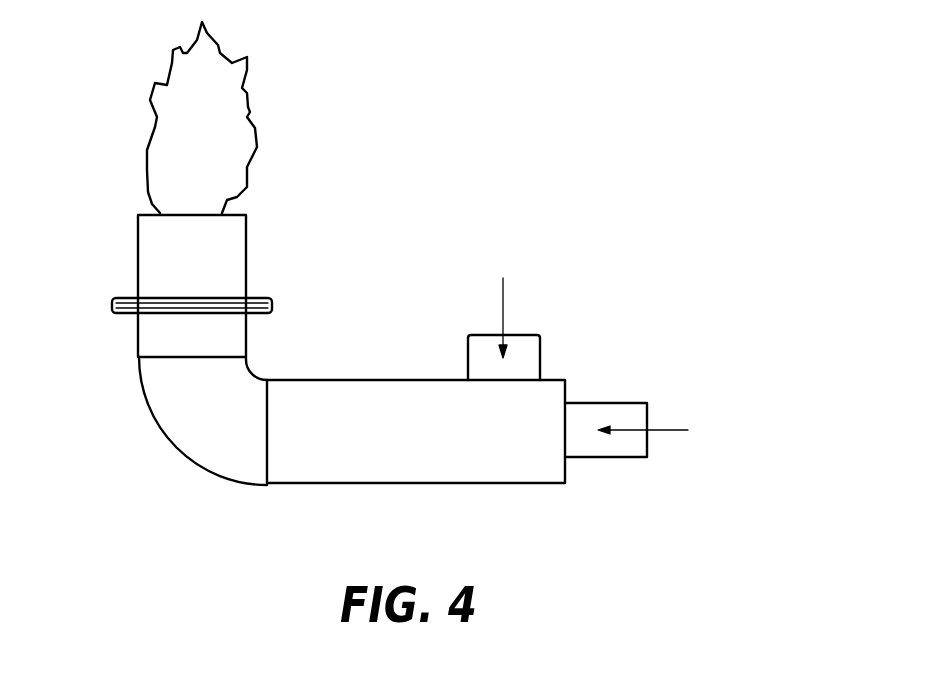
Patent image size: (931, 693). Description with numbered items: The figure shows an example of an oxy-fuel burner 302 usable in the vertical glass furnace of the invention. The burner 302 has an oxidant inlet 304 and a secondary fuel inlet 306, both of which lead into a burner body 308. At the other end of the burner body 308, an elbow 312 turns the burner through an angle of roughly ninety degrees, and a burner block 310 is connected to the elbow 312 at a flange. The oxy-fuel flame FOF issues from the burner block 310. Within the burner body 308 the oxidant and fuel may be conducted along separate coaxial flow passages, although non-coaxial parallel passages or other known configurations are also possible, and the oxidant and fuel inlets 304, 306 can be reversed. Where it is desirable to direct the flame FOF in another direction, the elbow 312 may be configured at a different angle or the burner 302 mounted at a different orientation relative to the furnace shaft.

The oxy-fuel burner 302 is at (644, 257).
The oxidant inlet 304 is at (505, 307).
The secondary fuel inlet 306 is at (667, 430).
The burner body 308 is at (325, 473).
The burner block 310 is at (230, 243).
The elbow 312 is at (177, 423).
The oxy-fuel flame FOF is at (236, 130).